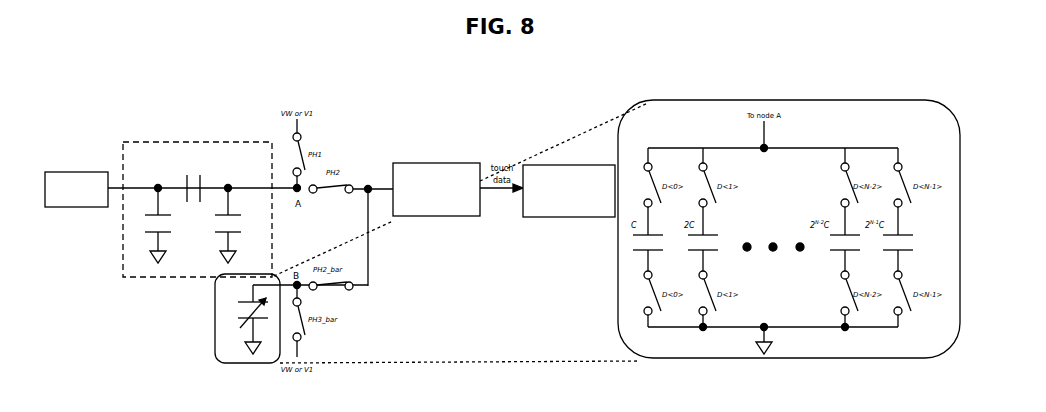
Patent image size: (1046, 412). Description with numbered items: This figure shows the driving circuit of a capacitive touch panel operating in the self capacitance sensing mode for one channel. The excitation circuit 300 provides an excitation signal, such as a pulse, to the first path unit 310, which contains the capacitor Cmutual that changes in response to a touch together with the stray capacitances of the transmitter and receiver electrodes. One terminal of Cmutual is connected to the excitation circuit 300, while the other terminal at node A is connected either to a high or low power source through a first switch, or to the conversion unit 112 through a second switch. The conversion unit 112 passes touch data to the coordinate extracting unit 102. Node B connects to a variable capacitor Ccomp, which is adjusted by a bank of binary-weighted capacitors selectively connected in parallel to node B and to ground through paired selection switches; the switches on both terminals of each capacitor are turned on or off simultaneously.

The excitation circuit 300 is at (72, 171).
The first path unit 310 is at (192, 142).
The conversion unit 112 is at (434, 163).
The coordinate extracting unit 102 is at (568, 165).